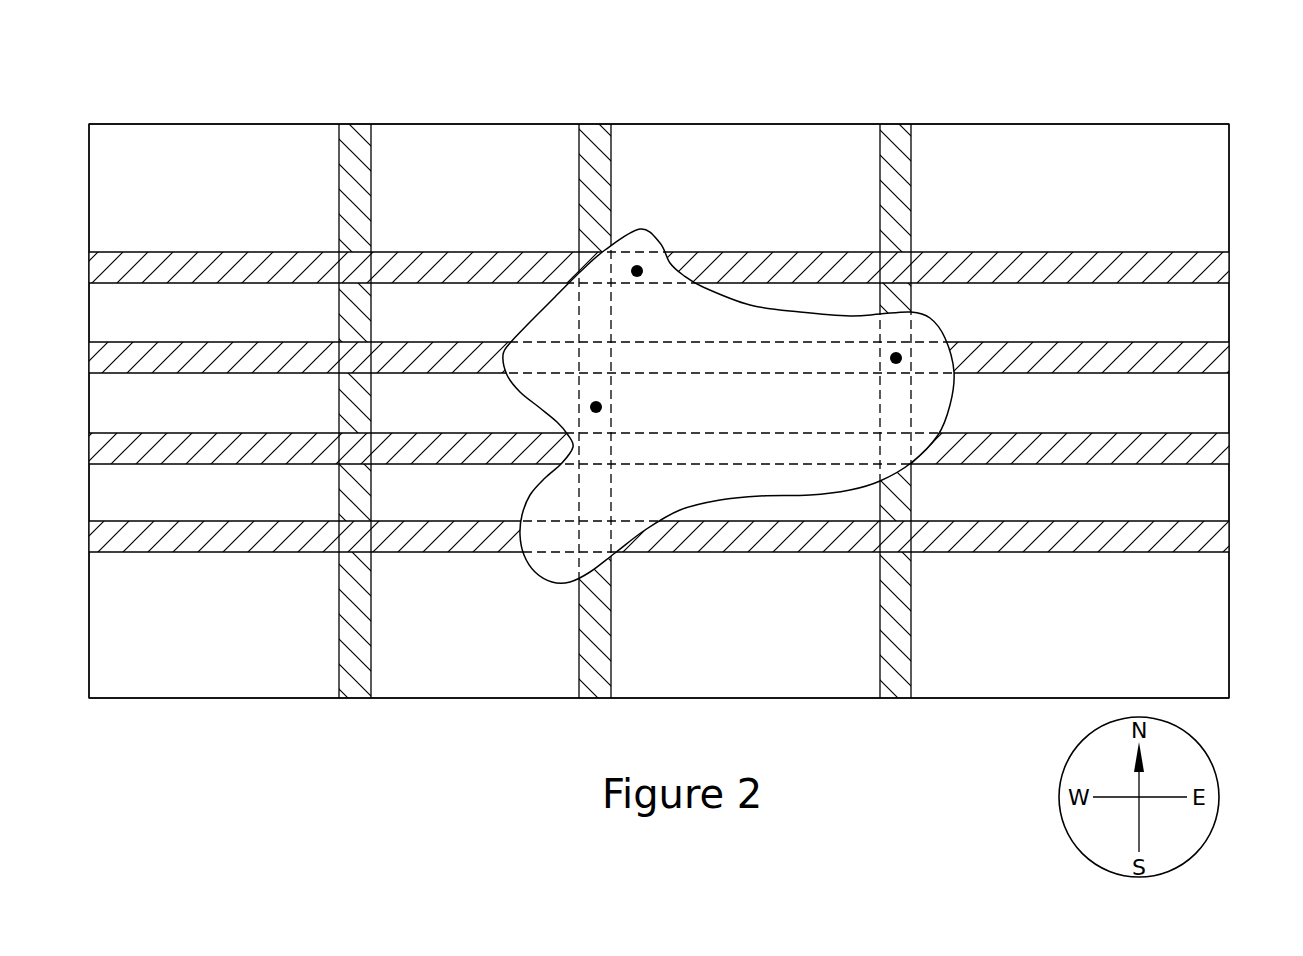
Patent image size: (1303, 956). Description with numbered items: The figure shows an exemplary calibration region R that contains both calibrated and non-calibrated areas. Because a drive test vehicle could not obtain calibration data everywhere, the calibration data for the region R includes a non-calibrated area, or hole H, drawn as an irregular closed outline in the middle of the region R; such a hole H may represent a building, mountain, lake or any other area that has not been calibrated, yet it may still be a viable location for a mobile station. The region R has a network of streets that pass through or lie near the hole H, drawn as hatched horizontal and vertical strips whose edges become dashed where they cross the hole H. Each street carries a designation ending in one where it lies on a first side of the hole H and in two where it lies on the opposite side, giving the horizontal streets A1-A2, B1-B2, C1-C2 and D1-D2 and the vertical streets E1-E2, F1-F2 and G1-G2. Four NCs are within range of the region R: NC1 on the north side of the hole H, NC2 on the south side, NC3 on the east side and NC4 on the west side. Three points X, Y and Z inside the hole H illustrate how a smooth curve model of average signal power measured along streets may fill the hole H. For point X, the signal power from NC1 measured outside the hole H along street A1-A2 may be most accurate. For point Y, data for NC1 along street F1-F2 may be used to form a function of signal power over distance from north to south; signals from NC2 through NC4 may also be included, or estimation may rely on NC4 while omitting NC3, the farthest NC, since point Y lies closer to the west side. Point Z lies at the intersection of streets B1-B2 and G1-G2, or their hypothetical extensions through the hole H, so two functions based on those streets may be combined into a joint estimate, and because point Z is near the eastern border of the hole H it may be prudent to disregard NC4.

The calibration region R is at (1058, 106).
The hole H is at (728, 406).
The point X is at (636, 289).
The point Y is at (610, 405).
The point Z is at (879, 374).
The street A first side A1 is at (364, 252).
The street A opposite side A2 is at (934, 252).
The street B first side B1 is at (364, 342).
The street B opposite side B2 is at (934, 342).
The street C first side C1 is at (364, 433).
The street C opposite side C2 is at (934, 433).
The street D first side D1 is at (364, 521).
The street D opposite side D2 is at (934, 521).
The street E first side E1 is at (376, 267).
The street E opposite side E2 is at (376, 554).
The street F first side F1 is at (615, 267).
The street F opposite side F2 is at (615, 554).
The street G first side G1 is at (916, 267).
The street G opposite side G2 is at (916, 554).
The north neighboring cell NC1 is at (665, 101).
The south neighboring cell NC2 is at (686, 744).
The east neighboring cell NC3 is at (1297, 409).
The west neighboring cell NC4 is at (76, 409).